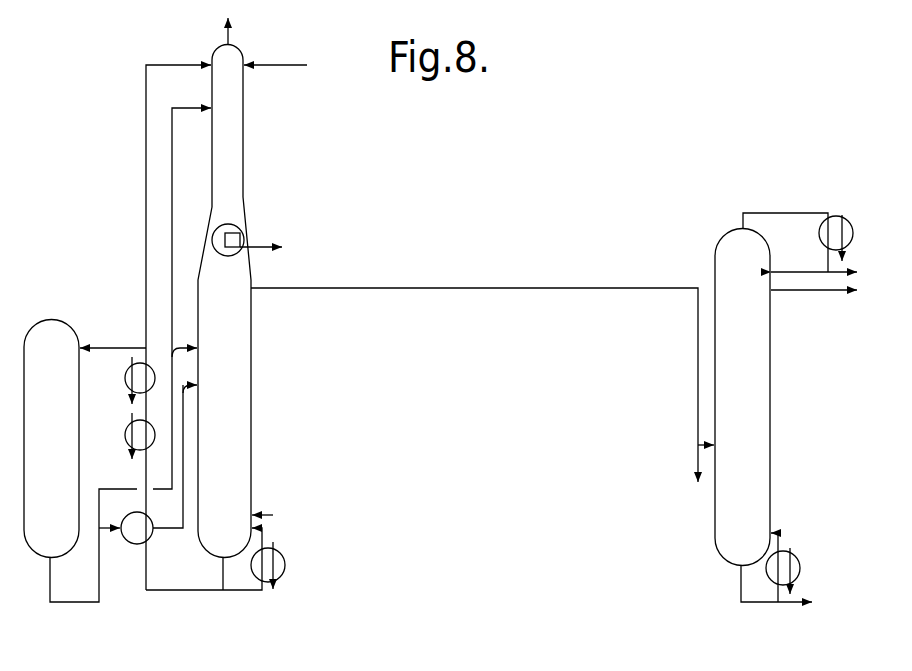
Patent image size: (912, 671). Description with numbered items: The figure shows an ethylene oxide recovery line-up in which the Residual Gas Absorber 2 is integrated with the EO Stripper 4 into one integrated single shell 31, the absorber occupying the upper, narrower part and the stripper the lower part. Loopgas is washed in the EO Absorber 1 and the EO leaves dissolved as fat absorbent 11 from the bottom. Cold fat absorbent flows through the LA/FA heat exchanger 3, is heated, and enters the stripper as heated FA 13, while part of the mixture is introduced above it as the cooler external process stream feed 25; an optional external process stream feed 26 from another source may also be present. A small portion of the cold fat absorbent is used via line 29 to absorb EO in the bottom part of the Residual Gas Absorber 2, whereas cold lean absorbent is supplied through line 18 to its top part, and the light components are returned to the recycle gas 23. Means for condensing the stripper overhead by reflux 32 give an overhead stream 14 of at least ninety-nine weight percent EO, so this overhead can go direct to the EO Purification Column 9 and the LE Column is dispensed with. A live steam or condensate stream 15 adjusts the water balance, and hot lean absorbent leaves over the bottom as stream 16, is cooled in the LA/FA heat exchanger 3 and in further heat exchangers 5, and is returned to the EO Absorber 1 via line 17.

The EO Absorber 1 is at (45, 333).
The Residual Gas Absorber 2 is at (230, 155).
The LA/FA heat exchanger 3 is at (133, 536).
The EO Stripper 4 is at (232, 438).
The heat exchangers 5 is at (128, 428).
The EO Purification Column 9 is at (748, 410).
The Fat Absorbent 11 is at (48, 565).
The heated FA 13 is at (205, 378).
The overhead stream 14 is at (258, 292).
The live steam or condensate stream 15 is at (273, 512).
The bottom stream of hot LA 16 is at (223, 566).
The line to EO Absorber 17 is at (96, 347).
The line of cold LA to RA 18 is at (206, 62).
The recycle gas 23 is at (234, 33).
The external process stream feed 25 is at (205, 340).
The optional external process stream feed 26 is at (256, 68).
The cold FA portion to RA 29 is at (205, 105).
The integrated single shell 31 is at (227, 270).
The reflux means for condensing overhead 32 is at (283, 236).